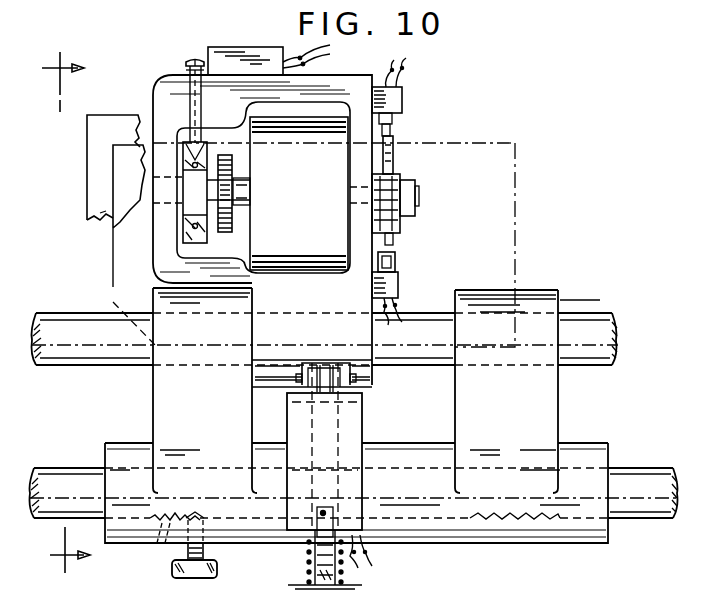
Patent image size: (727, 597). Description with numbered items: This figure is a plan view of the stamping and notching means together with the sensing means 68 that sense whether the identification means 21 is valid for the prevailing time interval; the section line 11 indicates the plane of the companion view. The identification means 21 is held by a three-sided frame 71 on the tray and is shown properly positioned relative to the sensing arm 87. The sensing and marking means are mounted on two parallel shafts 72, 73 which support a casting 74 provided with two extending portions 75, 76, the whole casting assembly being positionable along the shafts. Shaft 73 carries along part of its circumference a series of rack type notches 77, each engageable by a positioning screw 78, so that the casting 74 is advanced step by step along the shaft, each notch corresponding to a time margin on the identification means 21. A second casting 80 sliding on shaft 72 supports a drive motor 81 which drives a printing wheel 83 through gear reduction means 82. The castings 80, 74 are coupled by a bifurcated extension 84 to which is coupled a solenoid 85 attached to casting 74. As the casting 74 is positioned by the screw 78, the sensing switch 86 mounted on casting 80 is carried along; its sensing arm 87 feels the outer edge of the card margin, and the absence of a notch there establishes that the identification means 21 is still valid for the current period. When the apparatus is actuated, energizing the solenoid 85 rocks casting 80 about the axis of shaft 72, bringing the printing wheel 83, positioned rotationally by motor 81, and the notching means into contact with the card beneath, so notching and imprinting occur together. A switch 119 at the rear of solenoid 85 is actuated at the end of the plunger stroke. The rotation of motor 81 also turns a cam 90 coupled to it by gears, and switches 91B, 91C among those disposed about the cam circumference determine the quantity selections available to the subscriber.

The section line 11 is at (54, 312).
The identification means 21 is at (514, 145).
The sensing and marking means 68 is at (530, 223).
The three-sided frame 71 is at (97, 200).
The shaft 72 is at (612, 315).
The shaft 73 is at (653, 470).
The casting 74 is at (576, 543).
The extending portion 75 is at (550, 392).
The extending portion 76 is at (153, 420).
The rack type notches 77 is at (165, 527).
The positioning screw 78 is at (216, 575).
The second casting 80 is at (347, 78).
The drive motor 81 is at (302, 206).
The gear reduction means 82 is at (233, 165).
The printing wheel 83 is at (192, 212).
The bifurcated extension 84 is at (373, 380).
The solenoid 85 is at (358, 418).
The sensing switch 86 is at (255, 56).
The sensing arm 87 is at (195, 64).
The cam 90 is at (393, 155).
The switch 91B is at (396, 283).
The switch 91C is at (401, 100).
The switch 119 is at (312, 560).